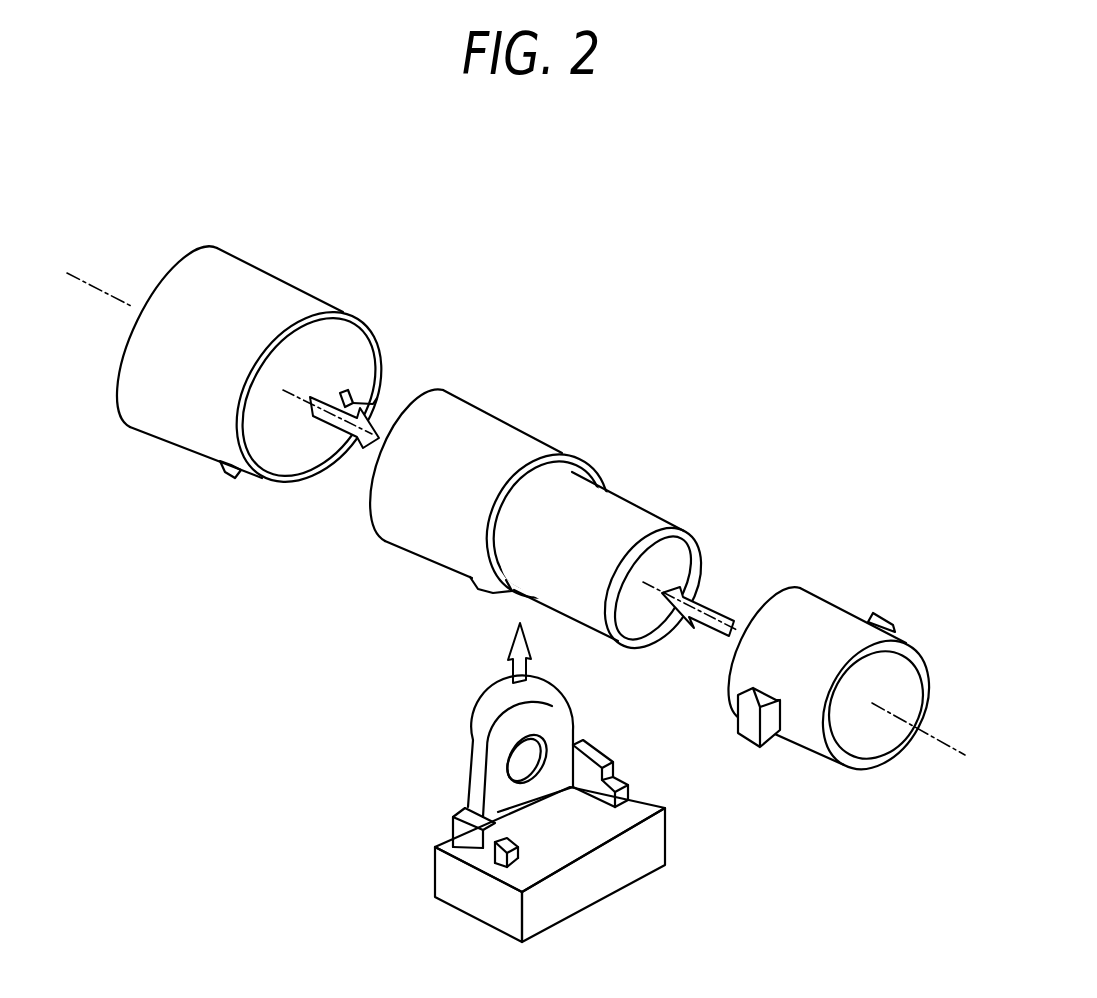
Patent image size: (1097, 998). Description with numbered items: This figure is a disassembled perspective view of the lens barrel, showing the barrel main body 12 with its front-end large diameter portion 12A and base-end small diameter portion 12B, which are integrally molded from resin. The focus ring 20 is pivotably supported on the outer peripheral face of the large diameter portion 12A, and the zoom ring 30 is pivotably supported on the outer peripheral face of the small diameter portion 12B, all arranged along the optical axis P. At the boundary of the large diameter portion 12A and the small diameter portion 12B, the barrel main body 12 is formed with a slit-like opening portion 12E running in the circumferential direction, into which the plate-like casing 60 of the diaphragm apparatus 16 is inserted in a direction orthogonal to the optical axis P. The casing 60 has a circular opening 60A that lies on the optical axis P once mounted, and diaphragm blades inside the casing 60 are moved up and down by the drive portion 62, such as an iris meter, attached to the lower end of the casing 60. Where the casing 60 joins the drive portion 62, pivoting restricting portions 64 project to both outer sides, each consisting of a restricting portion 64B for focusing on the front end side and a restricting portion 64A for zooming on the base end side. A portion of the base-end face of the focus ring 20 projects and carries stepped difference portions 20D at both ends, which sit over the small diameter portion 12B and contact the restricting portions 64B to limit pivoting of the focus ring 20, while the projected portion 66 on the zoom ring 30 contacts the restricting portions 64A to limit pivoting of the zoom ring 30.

The focus ring 20 is at (267, 369).
The stepped difference portion 20D is at (370, 397).
The barrel main body 12 is at (545, 501).
The large diameter portion 12A is at (542, 440).
The small diameter portion 12B is at (650, 522).
The opening portion 12E is at (496, 595).
The zoom ring 30 is at (843, 646).
The projected portion 66 is at (888, 625).
The optical axis P is at (948, 738).
The diaphragm apparatus 16 is at (507, 814).
The casing 60 is at (483, 746).
The opening 60A is at (516, 760).
The drive portion 62 is at (567, 907).
The pivoting restricting portion 64 is at (516, 814).
The restricting portion for zooming 64A is at (617, 776).
The restricting portion for focusing 64B is at (583, 744).